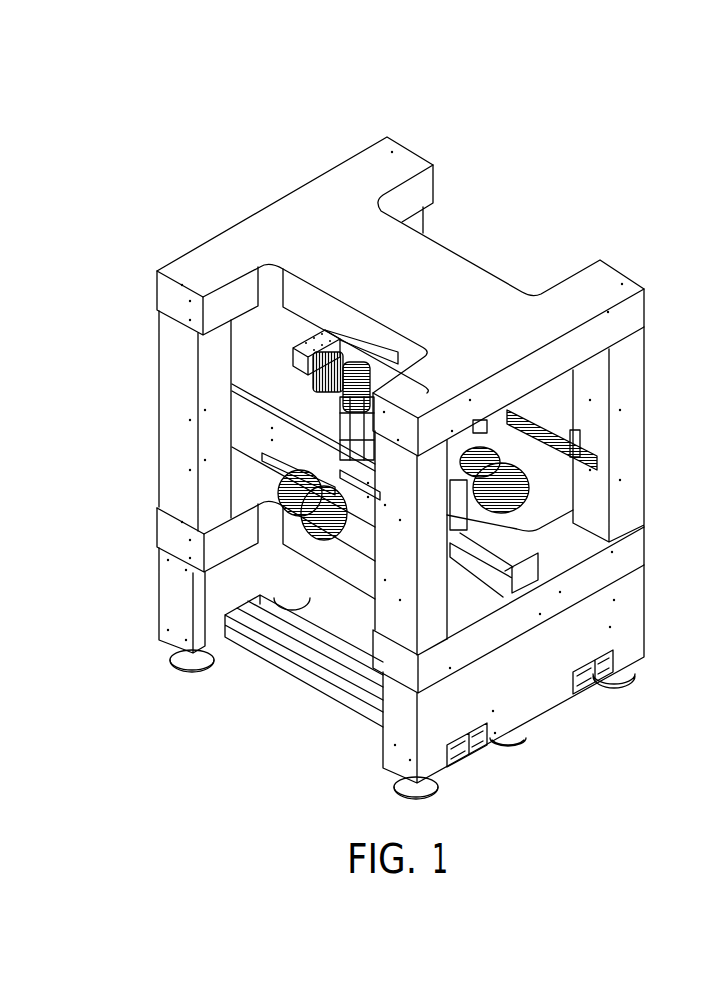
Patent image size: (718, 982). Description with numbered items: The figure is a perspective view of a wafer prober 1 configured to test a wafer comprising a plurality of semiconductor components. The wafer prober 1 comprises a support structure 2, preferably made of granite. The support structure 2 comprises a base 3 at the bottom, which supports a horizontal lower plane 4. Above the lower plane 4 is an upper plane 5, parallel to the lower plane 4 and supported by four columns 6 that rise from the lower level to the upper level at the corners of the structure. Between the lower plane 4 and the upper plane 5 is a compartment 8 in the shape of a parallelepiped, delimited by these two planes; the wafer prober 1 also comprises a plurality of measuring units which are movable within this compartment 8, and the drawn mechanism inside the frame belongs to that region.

The wafer prober 1 is at (196, 140).
The support structure 2 is at (140, 340).
The base 3 is at (631, 623).
The lower plane 4 is at (635, 550).
The upper plane 5 is at (635, 311).
The columns 6 is at (172, 465).
The compartment 8 is at (232, 346).